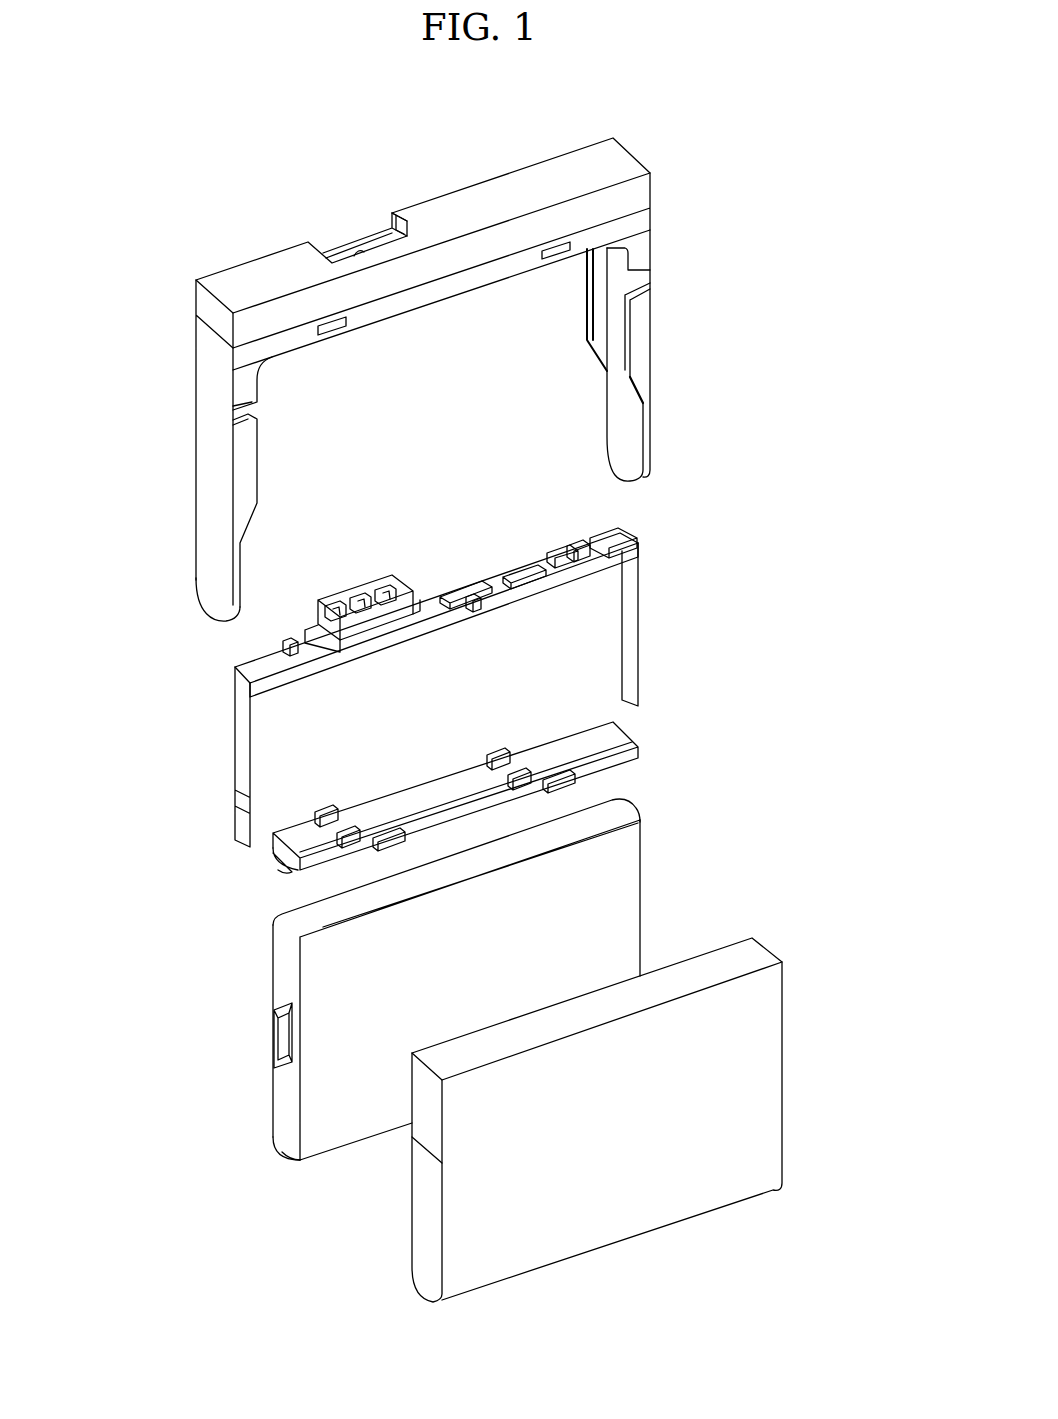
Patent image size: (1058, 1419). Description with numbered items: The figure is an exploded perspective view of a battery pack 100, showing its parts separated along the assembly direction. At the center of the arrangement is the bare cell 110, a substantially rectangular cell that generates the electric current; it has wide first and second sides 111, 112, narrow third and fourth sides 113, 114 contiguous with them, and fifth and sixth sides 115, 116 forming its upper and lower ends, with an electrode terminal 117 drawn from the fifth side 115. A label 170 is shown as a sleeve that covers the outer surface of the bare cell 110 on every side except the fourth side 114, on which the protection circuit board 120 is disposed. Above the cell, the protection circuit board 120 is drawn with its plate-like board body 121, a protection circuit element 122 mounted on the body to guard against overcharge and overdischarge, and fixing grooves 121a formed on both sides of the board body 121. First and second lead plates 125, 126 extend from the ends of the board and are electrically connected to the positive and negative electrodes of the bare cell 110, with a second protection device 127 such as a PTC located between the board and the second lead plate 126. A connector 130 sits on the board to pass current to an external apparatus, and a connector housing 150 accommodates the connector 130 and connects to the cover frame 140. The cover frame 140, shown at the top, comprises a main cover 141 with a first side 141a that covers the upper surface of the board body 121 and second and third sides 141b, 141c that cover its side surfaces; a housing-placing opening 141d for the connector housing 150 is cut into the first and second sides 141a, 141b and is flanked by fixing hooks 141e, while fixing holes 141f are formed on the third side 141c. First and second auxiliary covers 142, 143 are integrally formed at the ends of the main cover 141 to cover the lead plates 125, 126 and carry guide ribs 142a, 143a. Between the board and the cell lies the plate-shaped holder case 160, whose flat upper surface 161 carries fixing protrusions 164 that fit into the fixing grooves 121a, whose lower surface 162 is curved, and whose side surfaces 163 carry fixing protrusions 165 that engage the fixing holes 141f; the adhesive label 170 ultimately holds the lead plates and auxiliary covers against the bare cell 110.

The battery pack 100 is at (145, 143).
The bare cell 110 is at (265, 938).
The first side 111 is at (343, 1135).
The second side 112 is at (272, 991).
The third side 113 is at (310, 1163).
The fourth side 114 is at (303, 913).
The fifth side 115 is at (279, 1086).
The sixth side 116 is at (646, 888).
The electrode terminal 117 is at (273, 1041).
The protection circuit board 120 is at (228, 668).
The board body 121 is at (428, 617).
The fixing grooves 121a is at (480, 610).
The protection circuit element 122 is at (462, 590).
The first lead plate 125 is at (235, 745).
The second lead plate 126 is at (640, 633).
The second protection device 127 is at (573, 537).
The connector 130 is at (357, 596).
The cover frame 140 is at (183, 305).
The main cover 141 is at (252, 258).
The first side 141a is at (497, 190).
The second side 141b is at (347, 238).
The third side 141c is at (443, 300).
The housing-placing opening 141d is at (360, 254).
The fixing hooks 141e is at (397, 217).
The fixing holes 141f is at (553, 262).
The first auxiliary cover 142 is at (190, 420).
The guide rib 142a is at (252, 462).
The second auxiliary cover 143 is at (658, 320).
The guide rib 143a is at (633, 375).
The connector housing 150 is at (380, 640).
The holder case 160 is at (642, 735).
The upper surface 161 is at (438, 790).
The lower surface 162 is at (278, 856).
The side surfaces 163 is at (632, 760).
The fixing protrusions 164 is at (517, 770).
The fixing protrusions 165 is at (563, 775).
The label 170 is at (782, 1088).